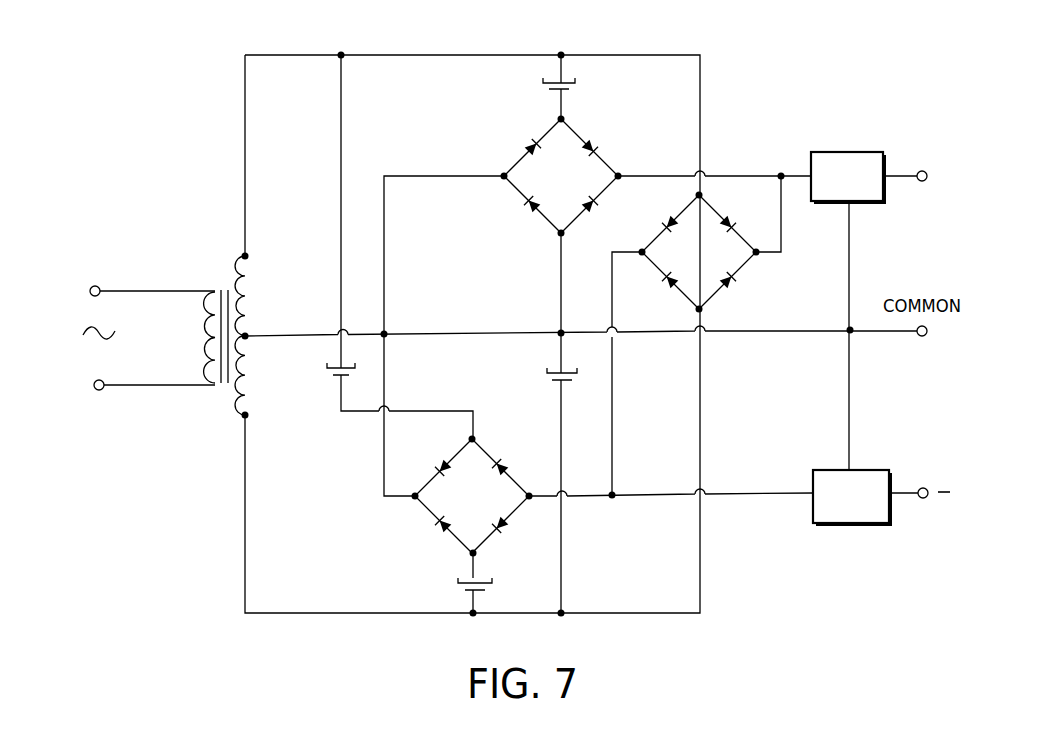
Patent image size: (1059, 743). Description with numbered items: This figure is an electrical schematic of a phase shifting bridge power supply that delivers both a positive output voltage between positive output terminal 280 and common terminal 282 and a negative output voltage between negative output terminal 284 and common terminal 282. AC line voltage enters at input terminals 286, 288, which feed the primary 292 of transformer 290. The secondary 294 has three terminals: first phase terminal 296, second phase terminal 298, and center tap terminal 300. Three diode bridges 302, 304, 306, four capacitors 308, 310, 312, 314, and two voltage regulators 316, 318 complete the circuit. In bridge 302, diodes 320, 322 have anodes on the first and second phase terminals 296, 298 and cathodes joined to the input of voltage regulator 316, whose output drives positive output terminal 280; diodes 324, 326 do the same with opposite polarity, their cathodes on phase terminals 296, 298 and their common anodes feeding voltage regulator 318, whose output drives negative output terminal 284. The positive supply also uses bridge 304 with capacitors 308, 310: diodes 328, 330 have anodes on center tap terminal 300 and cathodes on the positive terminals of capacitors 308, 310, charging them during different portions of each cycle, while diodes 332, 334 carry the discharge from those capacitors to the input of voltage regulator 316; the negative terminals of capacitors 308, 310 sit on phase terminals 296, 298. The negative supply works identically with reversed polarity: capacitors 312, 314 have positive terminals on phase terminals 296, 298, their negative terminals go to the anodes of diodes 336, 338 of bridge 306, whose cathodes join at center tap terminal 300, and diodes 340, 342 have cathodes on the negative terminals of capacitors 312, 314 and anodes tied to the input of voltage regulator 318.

The positive output terminal 280 is at (923, 181).
The common terminal 282 is at (920, 336).
The negative output terminal 284 is at (924, 498).
The input terminal 286 is at (97, 286).
The input terminal 288 is at (100, 390).
The transformer 290 is at (222, 262).
The primary 292 is at (215, 388).
The secondary 294 is at (236, 402).
The first phase terminal 296 is at (246, 254).
The second phase terminal 298 is at (247, 415).
The center tap terminal 300 is at (246, 334).
The diode bridge 302 is at (766, 271).
The diode bridge 304 is at (527, 233).
The diode bridge 306 is at (495, 437).
The capacitor 308 is at (576, 79).
The capacitor 310 is at (548, 371).
The capacitor 312 is at (327, 372).
The capacitor 314 is at (493, 580).
The voltage regulator 316 is at (849, 151).
The voltage regulator 318 is at (830, 469).
The diode 320 is at (731, 220).
The diode 322 is at (732, 286).
The diode 324 is at (672, 220).
The diode 326 is at (671, 286).
The diode 328 is at (527, 146).
The diode 330 is at (525, 205).
The diode 332 is at (594, 143).
The diode 334 is at (593, 207).
The diode 336 is at (444, 463).
The diode 338 is at (438, 525).
The diode 340 is at (506, 461).
The diode 342 is at (506, 524).